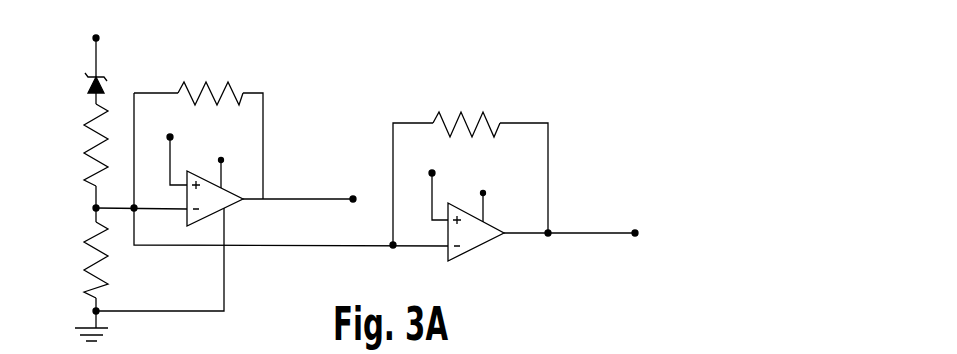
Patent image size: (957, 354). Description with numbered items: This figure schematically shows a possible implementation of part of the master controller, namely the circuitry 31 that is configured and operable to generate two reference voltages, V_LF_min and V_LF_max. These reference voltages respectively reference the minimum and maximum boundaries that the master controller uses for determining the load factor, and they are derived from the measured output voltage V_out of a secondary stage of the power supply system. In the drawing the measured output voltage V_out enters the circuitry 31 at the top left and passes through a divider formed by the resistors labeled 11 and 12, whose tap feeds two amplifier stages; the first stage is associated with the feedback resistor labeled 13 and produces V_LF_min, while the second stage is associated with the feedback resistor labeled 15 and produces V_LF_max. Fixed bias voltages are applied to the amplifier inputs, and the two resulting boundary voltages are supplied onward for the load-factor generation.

The circuitry 31 is at (514, 31).
The resistor R11 11 is at (76, 145).
The resistor R12 12 is at (76, 260).
The resistor R13 13 is at (210, 81).
The resistor R15 15 is at (466, 111).